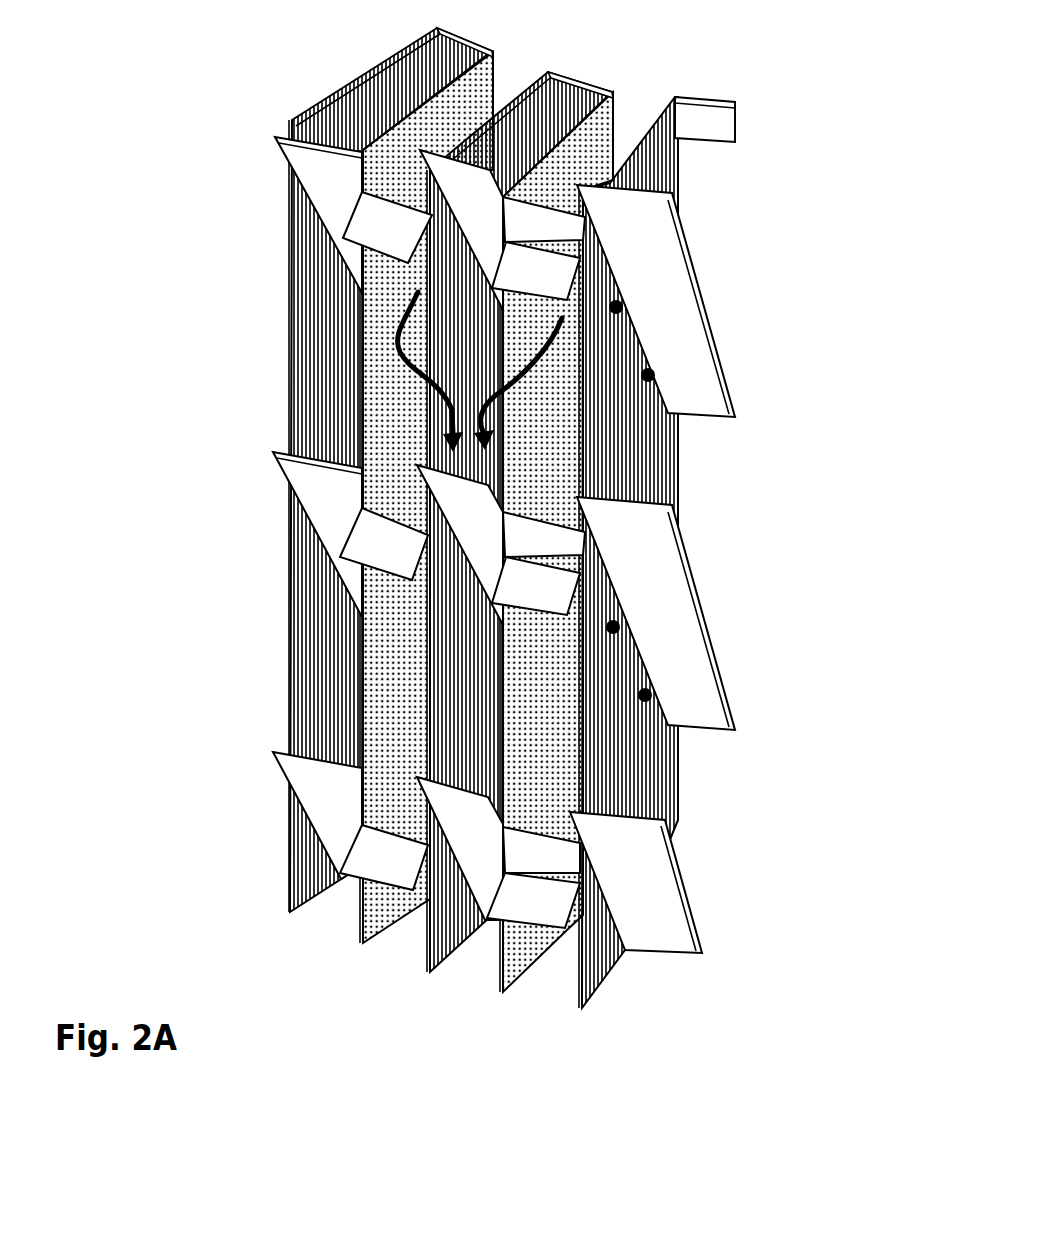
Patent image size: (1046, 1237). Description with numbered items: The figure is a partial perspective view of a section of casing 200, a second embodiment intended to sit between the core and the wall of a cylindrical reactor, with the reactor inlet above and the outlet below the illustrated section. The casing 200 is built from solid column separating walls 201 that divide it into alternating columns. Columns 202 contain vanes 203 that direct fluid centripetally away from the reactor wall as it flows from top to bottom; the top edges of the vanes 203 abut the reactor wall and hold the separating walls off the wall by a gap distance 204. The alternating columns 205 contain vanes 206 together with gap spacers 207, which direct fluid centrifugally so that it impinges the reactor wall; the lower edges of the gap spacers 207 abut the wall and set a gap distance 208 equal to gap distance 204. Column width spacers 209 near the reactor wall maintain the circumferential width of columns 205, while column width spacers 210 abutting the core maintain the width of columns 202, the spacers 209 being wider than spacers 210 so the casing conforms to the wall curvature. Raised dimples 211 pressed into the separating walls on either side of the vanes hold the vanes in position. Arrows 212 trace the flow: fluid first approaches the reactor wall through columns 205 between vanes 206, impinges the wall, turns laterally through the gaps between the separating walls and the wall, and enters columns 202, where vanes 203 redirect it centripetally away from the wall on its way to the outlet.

The casing 200 is at (497, 523).
The column separating walls 201 is at (456, 108).
The columns 202 is at (323, 912).
The vanes 203 is at (328, 489).
The gap distance 204 is at (355, 470).
The columns 205 is at (395, 942).
The vanes 206 is at (415, 744).
The gap spacers 207 is at (378, 541).
The gap distance 208 is at (433, 579).
The column width spacers 209 is at (396, 818).
The column width spacers 210 is at (566, 108).
The raised dimples 211 is at (646, 375).
The arrows 212 is at (398, 323).